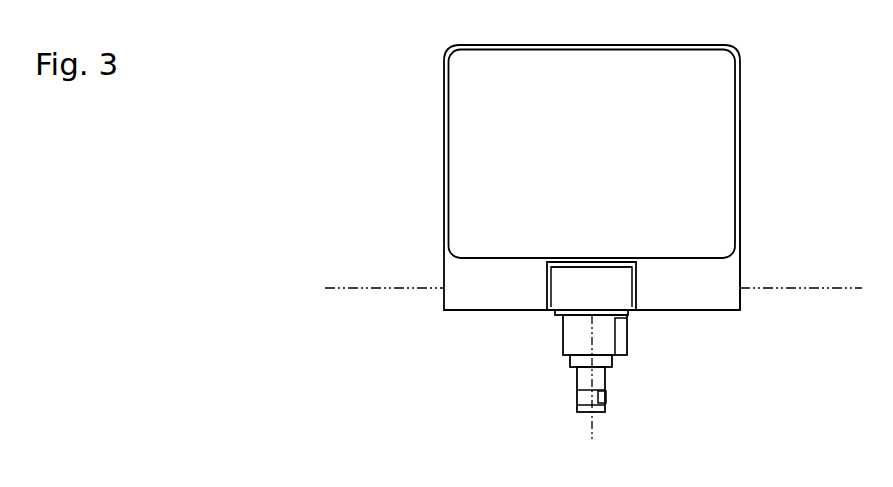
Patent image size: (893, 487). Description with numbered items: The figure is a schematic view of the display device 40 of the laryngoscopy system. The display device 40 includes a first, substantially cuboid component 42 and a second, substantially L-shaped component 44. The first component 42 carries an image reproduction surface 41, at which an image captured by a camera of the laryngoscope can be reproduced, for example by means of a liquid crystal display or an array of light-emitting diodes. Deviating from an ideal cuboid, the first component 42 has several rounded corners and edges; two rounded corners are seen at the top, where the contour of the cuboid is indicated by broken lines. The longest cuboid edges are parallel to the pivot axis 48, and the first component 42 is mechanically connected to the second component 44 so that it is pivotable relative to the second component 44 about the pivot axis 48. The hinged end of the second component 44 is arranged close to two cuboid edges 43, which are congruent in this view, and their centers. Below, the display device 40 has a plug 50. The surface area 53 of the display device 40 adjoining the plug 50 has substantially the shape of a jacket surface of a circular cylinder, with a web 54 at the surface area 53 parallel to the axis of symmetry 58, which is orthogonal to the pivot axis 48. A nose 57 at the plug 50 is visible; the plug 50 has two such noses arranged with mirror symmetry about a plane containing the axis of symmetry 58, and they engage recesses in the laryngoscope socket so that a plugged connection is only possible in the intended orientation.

The display device 40 is at (337, 105).
The image reproduction surface 41 is at (730, 80).
The first component 42 is at (735, 265).
The cuboid edges 43 is at (462, 312).
The second component 44 is at (552, 312).
The pivot axis 48 is at (408, 288).
The plug 50 is at (603, 375).
The surface area 53 is at (567, 343).
The web 54 is at (625, 343).
The nose 57 is at (603, 400).
The axis of symmetry 58 is at (583, 426).